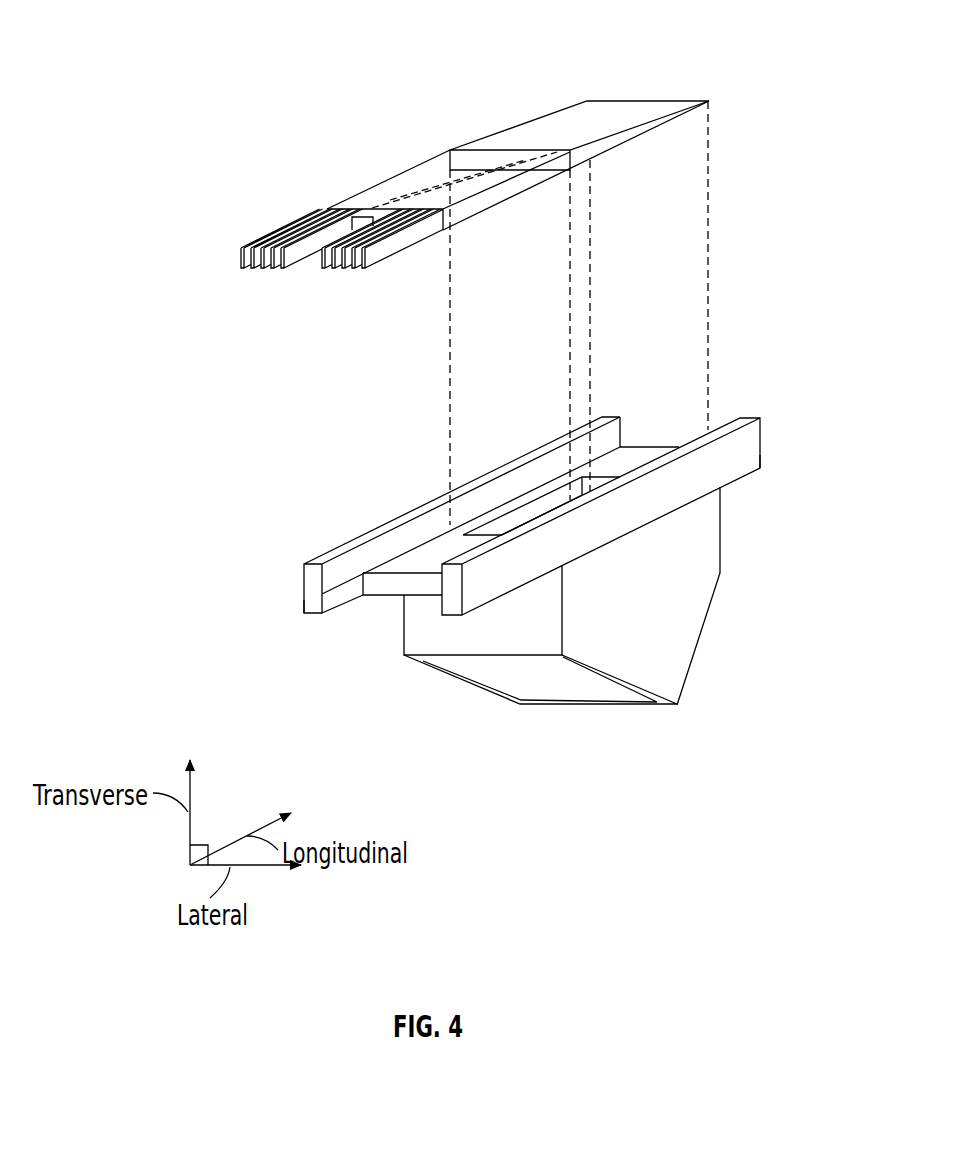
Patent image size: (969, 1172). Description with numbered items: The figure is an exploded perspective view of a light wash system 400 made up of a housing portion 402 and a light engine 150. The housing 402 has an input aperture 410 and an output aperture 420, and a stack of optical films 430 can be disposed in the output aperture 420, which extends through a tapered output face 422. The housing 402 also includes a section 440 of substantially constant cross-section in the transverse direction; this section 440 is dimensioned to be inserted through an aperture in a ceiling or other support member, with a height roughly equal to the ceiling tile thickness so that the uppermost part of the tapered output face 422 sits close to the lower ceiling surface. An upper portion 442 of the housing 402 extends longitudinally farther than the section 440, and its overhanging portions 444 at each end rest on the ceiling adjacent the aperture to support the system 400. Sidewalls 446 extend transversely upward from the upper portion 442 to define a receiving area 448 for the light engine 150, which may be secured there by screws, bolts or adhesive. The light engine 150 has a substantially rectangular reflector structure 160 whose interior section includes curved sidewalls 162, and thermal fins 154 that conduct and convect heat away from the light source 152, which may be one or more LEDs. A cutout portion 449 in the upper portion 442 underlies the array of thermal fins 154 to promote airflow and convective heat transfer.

The light wash system 400 is at (184, 49).
The light engine 150 is at (310, 191).
The light source 152 is at (368, 210).
The thermal fins 154 is at (293, 258).
The reflector structure 160 is at (417, 188).
The curved sidewalls 162 is at (395, 186).
The housing portion 402 is at (747, 650).
The input aperture 410 is at (548, 500).
The output aperture 420 is at (665, 707).
The tapered output face 422 is at (423, 660).
The stack of optical films 430 is at (576, 690).
The section of substantially constant cross-section 440 is at (713, 554).
The upper portion 442 is at (750, 445).
The overhanging portions 444 is at (744, 472).
The sidewalls 446 is at (340, 548).
The receiving area 448 is at (419, 533).
The cutout portion 449 is at (404, 583).